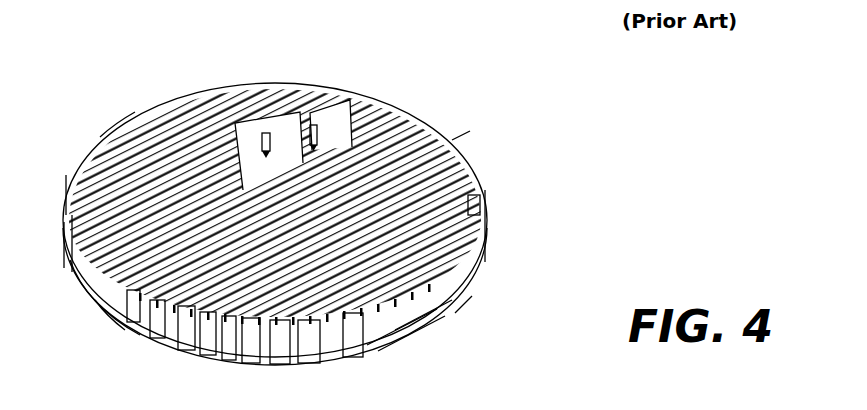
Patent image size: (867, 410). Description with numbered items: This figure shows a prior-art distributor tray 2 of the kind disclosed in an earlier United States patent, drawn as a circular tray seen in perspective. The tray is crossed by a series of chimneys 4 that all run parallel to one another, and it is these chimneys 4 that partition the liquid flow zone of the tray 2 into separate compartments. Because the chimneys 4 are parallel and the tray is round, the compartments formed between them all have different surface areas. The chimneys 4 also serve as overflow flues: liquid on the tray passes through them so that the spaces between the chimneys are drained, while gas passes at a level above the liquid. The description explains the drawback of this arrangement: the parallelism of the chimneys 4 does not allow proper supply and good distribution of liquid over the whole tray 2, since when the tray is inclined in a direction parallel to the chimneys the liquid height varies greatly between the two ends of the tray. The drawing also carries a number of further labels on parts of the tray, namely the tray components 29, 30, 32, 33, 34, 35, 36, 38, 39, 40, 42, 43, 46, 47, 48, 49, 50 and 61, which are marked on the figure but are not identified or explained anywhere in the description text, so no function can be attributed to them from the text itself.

The distributor tray 2 is at (480, 298).
The chimneys 4 is at (484, 210).
The base plate rim 29 is at (115, 127).
The base 30 is at (88, 306).
The connector pin 32 is at (269, 128).
The rail 33 is at (463, 303).
The fin end 34 is at (140, 328).
The rim lip 35 is at (113, 323).
The end wall 36 is at (65, 272).
The bar 38 is at (400, 347).
The notched fin 39 is at (330, 362).
The notched fin 40 is at (230, 366).
The block 42 is at (480, 190).
The notched fin 43 is at (300, 358).
The bar 46 is at (427, 333).
The notched fin 47 is at (370, 350).
The connector pin 48 is at (312, 122).
The notched fin 49 is at (177, 352).
The side wall 50 is at (73, 182).
The fin 61 is at (457, 143).